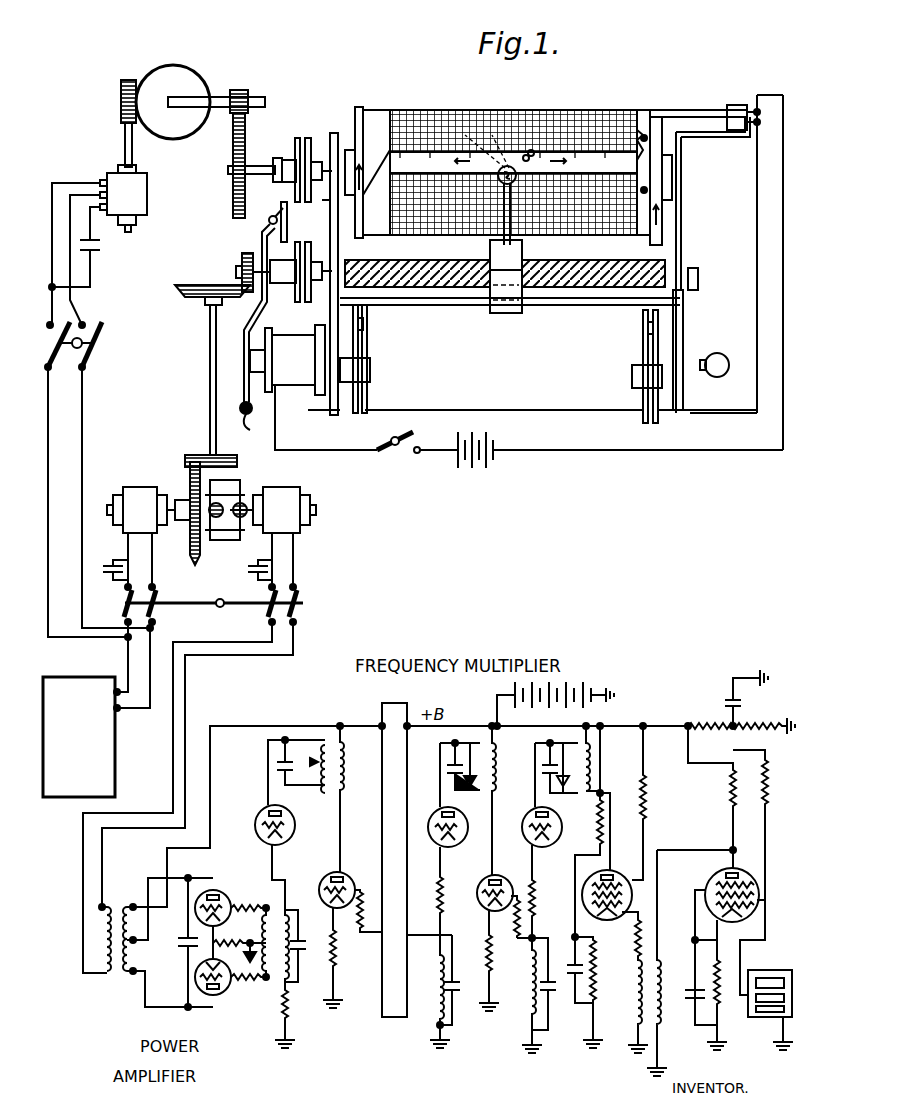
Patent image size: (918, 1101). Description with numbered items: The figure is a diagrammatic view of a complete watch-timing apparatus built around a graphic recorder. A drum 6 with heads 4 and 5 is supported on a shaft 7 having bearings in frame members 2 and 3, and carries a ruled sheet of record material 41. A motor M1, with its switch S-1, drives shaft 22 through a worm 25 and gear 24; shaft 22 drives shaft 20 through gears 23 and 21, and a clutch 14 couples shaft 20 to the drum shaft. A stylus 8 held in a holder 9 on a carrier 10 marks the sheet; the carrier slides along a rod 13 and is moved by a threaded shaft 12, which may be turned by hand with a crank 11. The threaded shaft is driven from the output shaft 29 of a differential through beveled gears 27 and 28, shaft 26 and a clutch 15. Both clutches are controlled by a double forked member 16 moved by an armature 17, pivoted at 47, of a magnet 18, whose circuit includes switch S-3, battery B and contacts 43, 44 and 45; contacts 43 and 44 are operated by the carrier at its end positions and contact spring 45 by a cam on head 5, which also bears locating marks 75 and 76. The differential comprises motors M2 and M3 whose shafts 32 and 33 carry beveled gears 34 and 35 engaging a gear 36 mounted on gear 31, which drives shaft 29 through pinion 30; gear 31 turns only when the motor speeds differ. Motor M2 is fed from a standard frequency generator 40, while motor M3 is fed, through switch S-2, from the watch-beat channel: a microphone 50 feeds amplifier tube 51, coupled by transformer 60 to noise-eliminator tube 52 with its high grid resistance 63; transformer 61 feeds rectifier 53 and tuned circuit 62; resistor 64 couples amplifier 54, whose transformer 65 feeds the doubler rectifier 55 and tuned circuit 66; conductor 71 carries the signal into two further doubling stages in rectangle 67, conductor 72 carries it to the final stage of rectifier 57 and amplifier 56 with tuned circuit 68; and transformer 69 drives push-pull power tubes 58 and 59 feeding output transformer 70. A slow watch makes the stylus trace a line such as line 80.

The frame member 2 is at (332, 135).
The frame member 3 is at (682, 222).
The drum head 4 is at (358, 105).
The drum head 5 is at (650, 120).
The drum 6 is at (378, 120).
The shaft 7 is at (328, 200).
The stylus 8 is at (534, 155).
The holder 9 is at (524, 240).
The carrier 10 is at (505, 313).
The crank 11 is at (700, 300).
The threaded shaft 12 is at (580, 265).
The rod 13 is at (562, 306).
The clutch 14 is at (297, 138).
The clutch 15 is at (302, 242).
The double forked member 16 is at (270, 215).
The armature 17 is at (262, 318).
The magnet 18 is at (292, 385).
The shaft 20 is at (250, 166).
The gear 21 is at (233, 148).
The shaft 22 is at (265, 100).
The gear 23 is at (242, 90).
The gear 24 is at (180, 80).
The worm 25 is at (121, 98).
The shaft 26 is at (245, 255).
The beveled gear 27 is at (240, 270).
The beveled gear 28 is at (185, 285).
The output shaft 29 is at (210, 380).
The beveled pinion 30 is at (205, 457).
The gear 31 is at (190, 482).
The motor shaft 32 is at (180, 522).
The motor shaft 33 is at (258, 492).
The beveled gear 34 is at (232, 483).
The beveled gear 35 is at (241, 545).
The beveled gear 36 is at (216, 545).
The standard frequency generator 40 is at (115, 735).
The sheet of record material 41 is at (530, 112).
The switch contact 43 is at (368, 311).
The switch contact 44 is at (643, 318).
The contact spring 45 is at (690, 110).
The pivot 47 is at (255, 419).
The microphone 50 is at (792, 972).
The space discharge device 51 is at (756, 880).
The tube 52 is at (615, 870).
The rectifier tube 53 is at (542, 847).
The amplifier tube 54 is at (500, 876).
The rectifier tube 55 is at (455, 842).
The amplifier tube 56 is at (330, 872).
The rectifier tube 57 is at (262, 815).
The power amplifier tube 58 is at (216, 995).
The power amplifier tube 59 is at (222, 892).
The transformer 60 is at (638, 960).
The transformer 61 is at (585, 795).
The tuned circuit 62 is at (545, 1022).
The resistance 63 is at (598, 945).
The resistor 64 is at (515, 938).
The transformer 65 is at (495, 792).
The tuned circuit 66 is at (450, 1020).
The rectangle 67 is at (395, 1017).
The tuned circuit 68 is at (290, 978).
The transformer 69 is at (268, 978).
The output transformer 70 is at (116, 905).
The conductor 71 is at (438, 935).
The conductor 72 is at (366, 935).
The mark 75 is at (662, 138).
The mark 76 is at (662, 192).
The line 80 is at (500, 170).
The motor M1 is at (147, 195).
The motor M2 is at (137, 510).
The motor M3 is at (284, 510).
The switch S-1 is at (87, 346).
The switch S-2 is at (213, 612).
The switch S-3 is at (417, 455).
The battery B is at (620, 463).